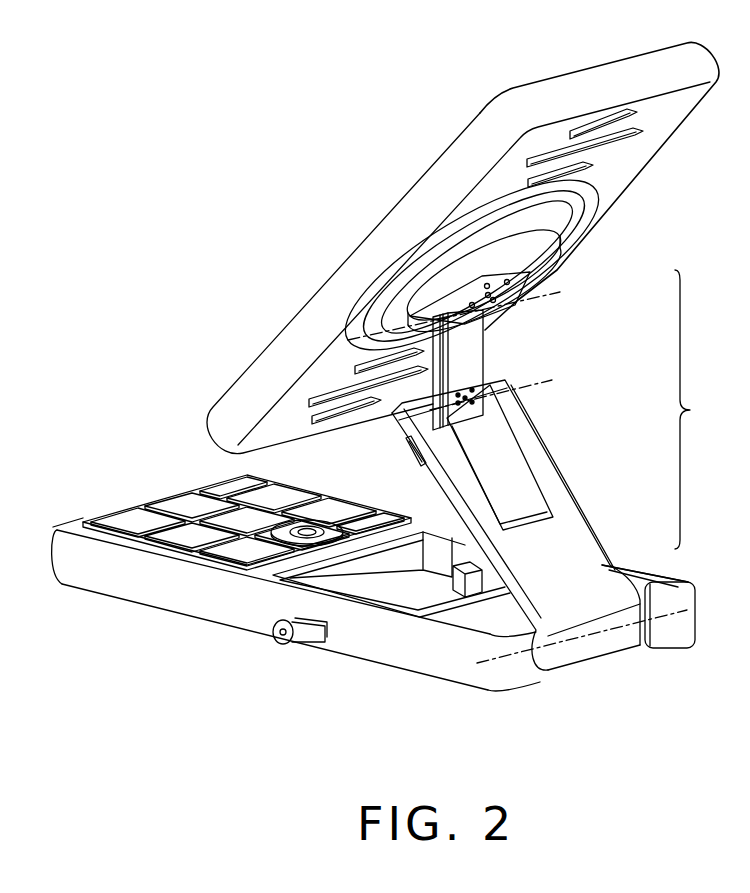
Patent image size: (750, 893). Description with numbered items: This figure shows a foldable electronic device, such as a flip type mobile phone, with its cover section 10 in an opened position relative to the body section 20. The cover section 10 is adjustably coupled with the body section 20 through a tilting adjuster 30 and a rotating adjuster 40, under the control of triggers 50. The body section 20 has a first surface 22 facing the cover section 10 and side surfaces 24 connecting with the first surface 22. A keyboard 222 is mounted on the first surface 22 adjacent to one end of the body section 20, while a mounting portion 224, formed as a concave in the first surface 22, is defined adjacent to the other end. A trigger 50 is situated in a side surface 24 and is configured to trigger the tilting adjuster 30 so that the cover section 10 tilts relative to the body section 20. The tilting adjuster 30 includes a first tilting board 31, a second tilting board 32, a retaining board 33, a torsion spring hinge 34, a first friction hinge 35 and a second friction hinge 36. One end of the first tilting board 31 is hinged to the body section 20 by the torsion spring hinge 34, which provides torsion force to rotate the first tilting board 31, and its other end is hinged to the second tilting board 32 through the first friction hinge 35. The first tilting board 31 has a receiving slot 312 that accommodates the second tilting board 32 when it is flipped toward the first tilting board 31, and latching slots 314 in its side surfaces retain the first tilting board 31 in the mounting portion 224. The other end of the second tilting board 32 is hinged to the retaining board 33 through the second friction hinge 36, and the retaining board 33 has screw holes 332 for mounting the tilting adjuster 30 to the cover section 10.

The cover section 10 is at (597, 68).
The body section 20 is at (357, 604).
The first surface 22 is at (219, 556).
The keyboard 222 is at (118, 517).
The side surface 24 is at (188, 593).
The mounting portion 224 is at (433, 607).
The tilting adjuster 30 is at (703, 409).
The first tilting board 31 is at (496, 522).
The receiving slot 312 is at (483, 472).
The latching slot 314 is at (405, 440).
The second tilting board 32 is at (468, 345).
The retaining board 33 is at (460, 270).
The screw hole 332 is at (484, 284).
The torsion spring hinge 34 is at (588, 627).
The first friction hinge 35 is at (520, 387).
The second friction hinge 36 is at (550, 296).
The rotating adjuster 40 is at (540, 234).
The trigger 50 is at (283, 644).